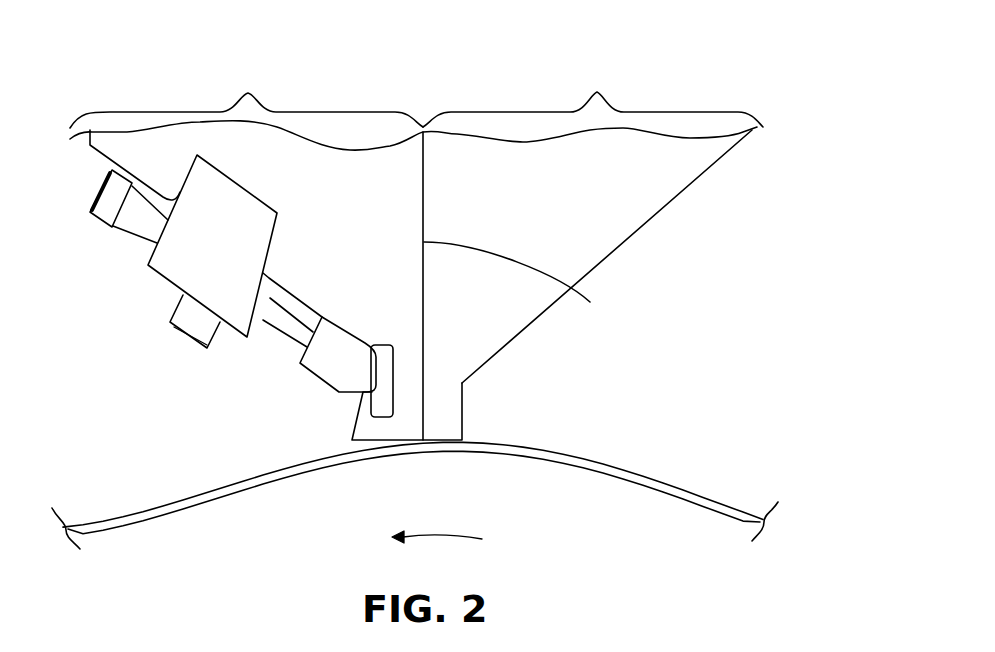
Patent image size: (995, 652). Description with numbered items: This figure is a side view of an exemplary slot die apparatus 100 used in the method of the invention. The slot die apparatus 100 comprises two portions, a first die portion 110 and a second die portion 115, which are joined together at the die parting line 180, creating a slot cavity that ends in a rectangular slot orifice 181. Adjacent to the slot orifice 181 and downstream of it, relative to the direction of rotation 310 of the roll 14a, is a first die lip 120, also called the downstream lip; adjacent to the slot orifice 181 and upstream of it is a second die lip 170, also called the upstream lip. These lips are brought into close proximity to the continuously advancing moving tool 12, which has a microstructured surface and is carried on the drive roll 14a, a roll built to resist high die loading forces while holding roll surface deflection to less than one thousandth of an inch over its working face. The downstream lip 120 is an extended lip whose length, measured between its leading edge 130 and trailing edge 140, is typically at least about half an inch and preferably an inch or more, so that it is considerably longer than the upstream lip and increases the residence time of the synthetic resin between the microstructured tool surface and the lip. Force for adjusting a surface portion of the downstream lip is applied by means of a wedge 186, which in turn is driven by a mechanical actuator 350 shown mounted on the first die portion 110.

The slot die apparatus 100 is at (672, 67).
The first die portion 110 is at (246, 95).
The second die portion 115 is at (593, 95).
The mechanical actuator 350 is at (185, 262).
The wedge 186 is at (303, 363).
The trailing edge 140 is at (350, 443).
The leading edge 130 is at (418, 425).
The die parting line 180 is at (590, 302).
The moving tool 12 is at (247, 478).
The drive roll 14a is at (320, 547).
The first die lip 120 is at (387, 440).
The slot orifice 181 is at (423, 440).
The second die lip 170 is at (452, 440).
The direction of rotation 310 is at (482, 539).